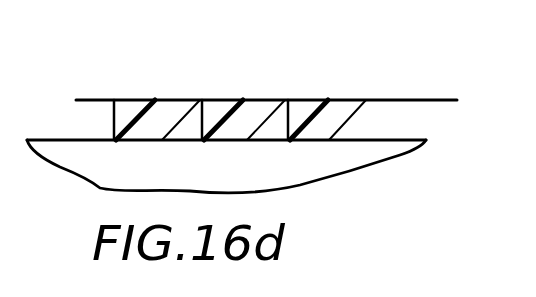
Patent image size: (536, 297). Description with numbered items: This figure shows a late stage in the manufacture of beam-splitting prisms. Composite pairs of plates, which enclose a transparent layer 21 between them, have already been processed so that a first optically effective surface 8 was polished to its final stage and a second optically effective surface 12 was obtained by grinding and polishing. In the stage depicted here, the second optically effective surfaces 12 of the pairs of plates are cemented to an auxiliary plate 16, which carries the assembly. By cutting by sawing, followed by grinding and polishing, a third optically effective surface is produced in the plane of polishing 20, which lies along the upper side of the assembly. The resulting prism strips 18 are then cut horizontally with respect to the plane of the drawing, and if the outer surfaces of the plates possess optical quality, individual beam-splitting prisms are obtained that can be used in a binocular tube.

The first optically effective surface 8 is at (112, 118).
The second optically effective surface 12 is at (192, 141).
The auxiliary plate 16 is at (368, 166).
The prism strips 18 is at (341, 100).
The plane of polishing 20 is at (100, 98).
The transparent layer 21 is at (309, 114).